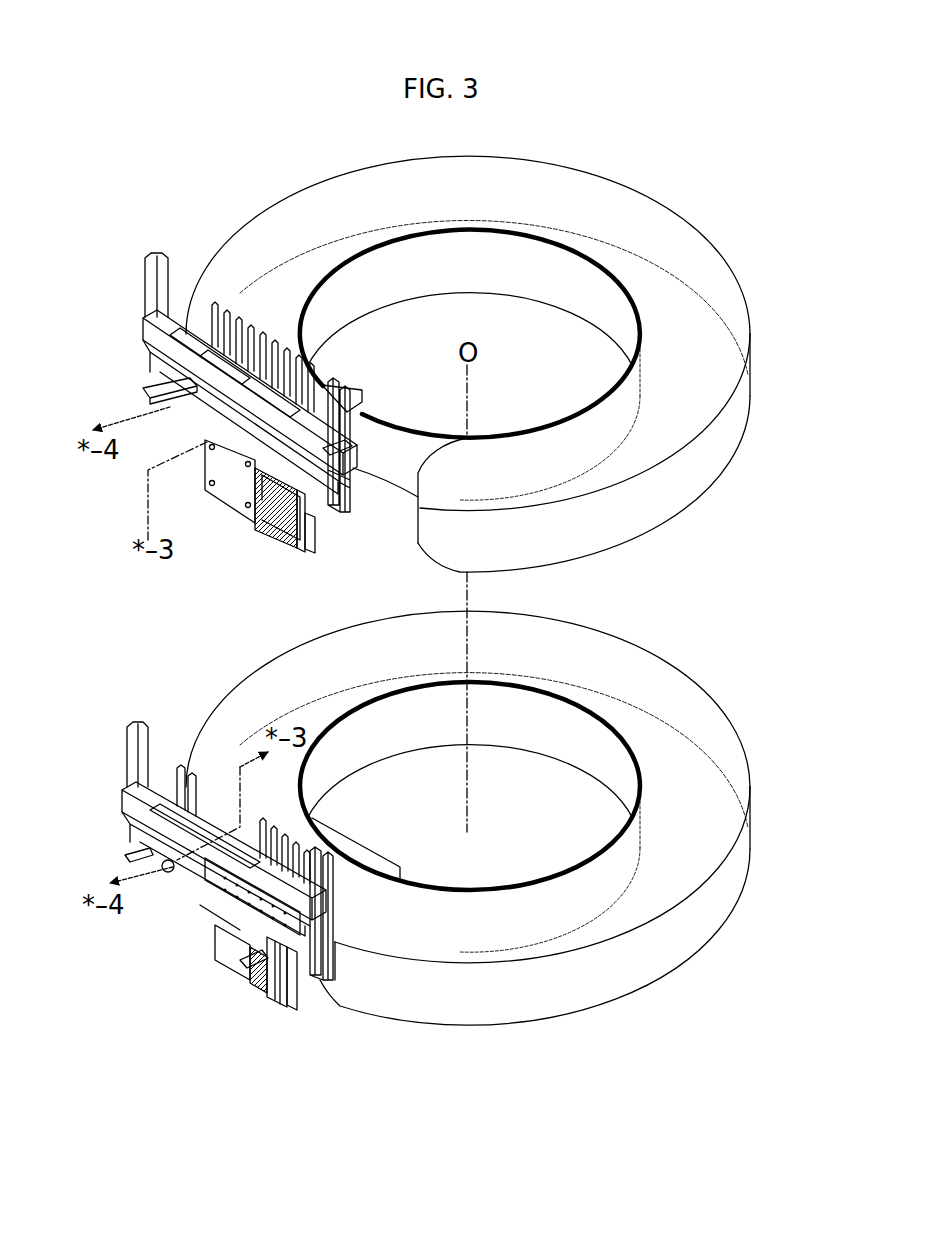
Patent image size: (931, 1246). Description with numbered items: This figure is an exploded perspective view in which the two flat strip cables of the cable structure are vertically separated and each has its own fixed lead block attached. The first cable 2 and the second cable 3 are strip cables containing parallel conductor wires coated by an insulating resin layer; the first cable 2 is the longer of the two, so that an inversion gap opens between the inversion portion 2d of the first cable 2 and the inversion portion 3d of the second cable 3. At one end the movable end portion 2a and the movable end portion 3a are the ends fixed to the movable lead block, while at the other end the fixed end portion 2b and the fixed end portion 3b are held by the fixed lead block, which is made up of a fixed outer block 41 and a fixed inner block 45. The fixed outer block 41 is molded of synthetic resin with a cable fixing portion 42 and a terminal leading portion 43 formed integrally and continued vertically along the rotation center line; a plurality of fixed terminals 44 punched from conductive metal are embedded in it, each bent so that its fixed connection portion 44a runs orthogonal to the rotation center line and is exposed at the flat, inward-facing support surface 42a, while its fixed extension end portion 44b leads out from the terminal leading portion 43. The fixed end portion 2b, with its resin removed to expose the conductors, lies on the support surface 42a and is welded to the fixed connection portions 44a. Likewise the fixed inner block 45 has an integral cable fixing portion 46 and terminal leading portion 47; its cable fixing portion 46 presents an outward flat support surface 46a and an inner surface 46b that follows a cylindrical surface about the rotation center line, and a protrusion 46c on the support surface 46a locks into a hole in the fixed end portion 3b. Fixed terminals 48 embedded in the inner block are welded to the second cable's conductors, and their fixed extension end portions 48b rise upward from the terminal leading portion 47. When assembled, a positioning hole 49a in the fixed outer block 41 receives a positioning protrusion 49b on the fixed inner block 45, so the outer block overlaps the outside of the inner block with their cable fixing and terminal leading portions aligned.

The first cable 2 is at (690, 928).
The movable end portion of the first cable 2a is at (378, 853).
The fixed end portion of the first cable 2b is at (213, 913).
The inversion portion of the first cable 2d is at (357, 930).
The second cable 3 is at (690, 467).
The movable end portion of the second cable 3a is at (362, 390).
The fixed end portion of the second cable 3b is at (232, 490).
The inversion portion of the second cable 3d is at (420, 537).
The fixed outer block 41 is at (250, 897).
The cable fixing portion 42 is at (280, 1007).
The support surface 42a is at (293, 977).
The terminal leading portion 43 is at (190, 887).
The fixed terminals 44 is at (175, 954).
The fixed connection portion 44a is at (253, 988).
The fixed extension end portion 44b is at (190, 895).
The fixed inner block 45 is at (254, 422).
The cable fixing portion 46 is at (275, 525).
The support surface 46a is at (260, 527).
The inner surface 46b is at (312, 518).
The protrusion 46c is at (222, 487).
The terminal leading portion 47 is at (193, 333).
The fixed terminals 48 is at (290, 348).
The fixed extension end portion 48b is at (227, 309).
The positioning hole 49a is at (247, 967).
The positioning protrusion 49b is at (323, 452).